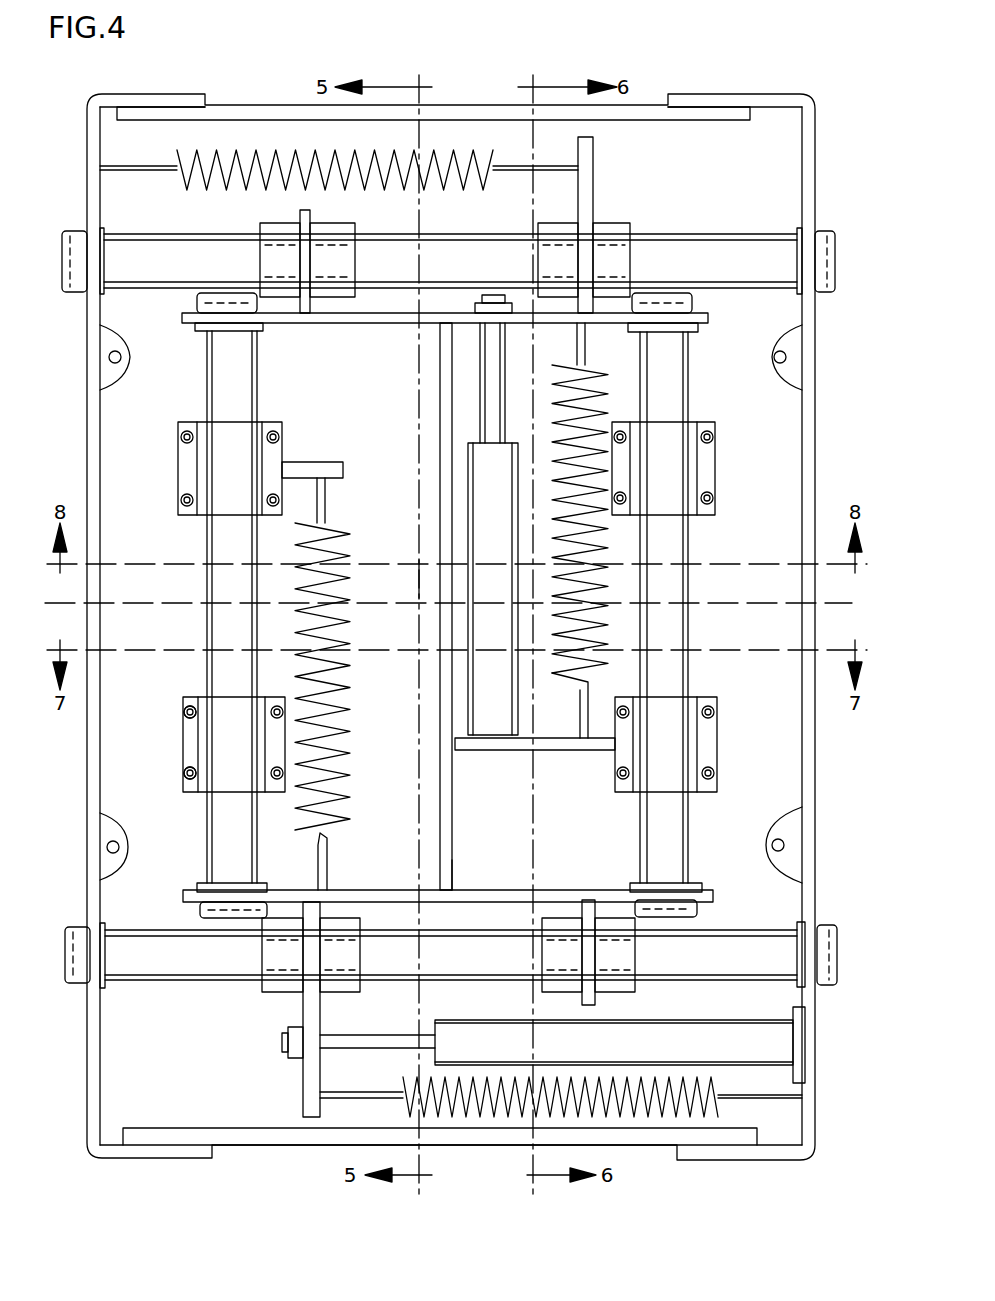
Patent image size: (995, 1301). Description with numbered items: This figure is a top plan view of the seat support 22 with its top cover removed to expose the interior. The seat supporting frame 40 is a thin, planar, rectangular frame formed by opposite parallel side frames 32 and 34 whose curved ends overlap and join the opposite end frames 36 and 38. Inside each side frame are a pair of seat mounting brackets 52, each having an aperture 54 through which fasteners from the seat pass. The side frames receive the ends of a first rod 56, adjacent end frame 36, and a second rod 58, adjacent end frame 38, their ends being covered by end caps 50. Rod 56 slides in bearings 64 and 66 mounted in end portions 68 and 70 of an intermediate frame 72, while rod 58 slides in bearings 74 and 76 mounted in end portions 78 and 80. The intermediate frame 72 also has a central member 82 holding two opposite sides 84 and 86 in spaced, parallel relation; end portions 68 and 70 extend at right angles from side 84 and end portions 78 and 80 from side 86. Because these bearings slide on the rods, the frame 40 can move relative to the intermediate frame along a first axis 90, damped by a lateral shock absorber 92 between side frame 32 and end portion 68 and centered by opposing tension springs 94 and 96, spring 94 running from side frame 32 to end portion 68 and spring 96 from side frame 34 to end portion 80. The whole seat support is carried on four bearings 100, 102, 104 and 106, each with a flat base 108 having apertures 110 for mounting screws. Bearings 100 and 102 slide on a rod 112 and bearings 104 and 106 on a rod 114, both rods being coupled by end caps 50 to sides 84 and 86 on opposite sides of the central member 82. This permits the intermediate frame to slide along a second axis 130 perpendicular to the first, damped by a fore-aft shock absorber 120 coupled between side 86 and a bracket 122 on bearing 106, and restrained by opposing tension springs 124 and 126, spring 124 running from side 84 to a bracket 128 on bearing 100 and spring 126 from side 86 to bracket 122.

The seat support 22 is at (827, 1115).
The side frame 32 is at (810, 728).
The side frame 34 is at (88, 390).
The end frame 36 is at (245, 1140).
The end frame 38 is at (655, 105).
The seat supporting frame 40 is at (88, 1052).
The end cap 50 is at (823, 230).
The seat mounting bracket 52 is at (785, 375).
The aperture 54 is at (774, 357).
The rod 56 is at (150, 970).
The rod 58 is at (137, 278).
The bearing 64 is at (273, 985).
The bearing 66 is at (635, 983).
The end portion 68 is at (318, 1015).
The end portion 70 is at (595, 995).
The intermediate frame 72 is at (455, 845).
The bearing 74 is at (265, 222).
The bearing 76 is at (618, 222).
The end portion 78 is at (312, 215).
The end portion 80 is at (592, 185).
The central member 82 is at (442, 670).
The side 84 is at (475, 888).
The side 86 is at (330, 320).
The first axis 90 is at (355, 607).
The lateral shock absorber 92 is at (698, 1032).
The spring 94 is at (400, 1085).
The spring 96 is at (262, 152).
The bearing 100 is at (245, 430).
The bearing 102 is at (217, 778).
The bearing 104 is at (688, 432).
The bearing 106 is at (688, 757).
The base 108 is at (185, 727).
The aperture 110 is at (187, 772).
The rod 112 is at (245, 852).
The rod 114 is at (675, 838).
The fore-aft shock absorber 120 is at (502, 460).
The bracket 122 is at (572, 745).
The spring 124 is at (345, 793).
The spring 126 is at (555, 395).
The bracket 128 is at (322, 465).
The second axis 130 is at (418, 577).